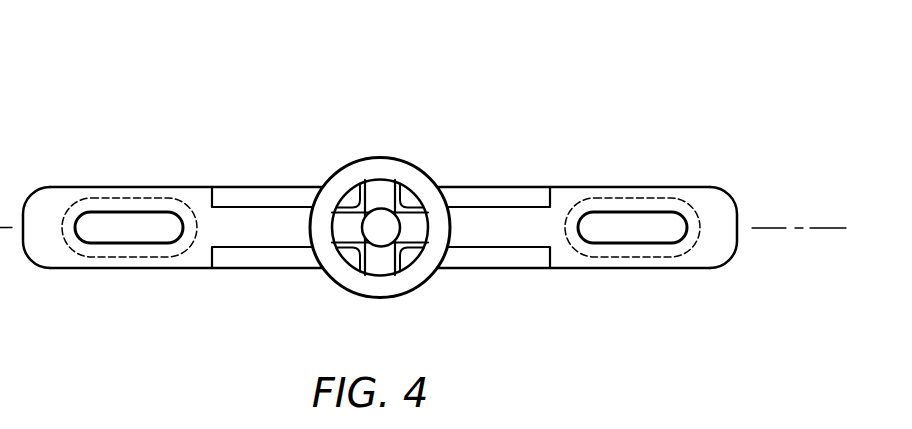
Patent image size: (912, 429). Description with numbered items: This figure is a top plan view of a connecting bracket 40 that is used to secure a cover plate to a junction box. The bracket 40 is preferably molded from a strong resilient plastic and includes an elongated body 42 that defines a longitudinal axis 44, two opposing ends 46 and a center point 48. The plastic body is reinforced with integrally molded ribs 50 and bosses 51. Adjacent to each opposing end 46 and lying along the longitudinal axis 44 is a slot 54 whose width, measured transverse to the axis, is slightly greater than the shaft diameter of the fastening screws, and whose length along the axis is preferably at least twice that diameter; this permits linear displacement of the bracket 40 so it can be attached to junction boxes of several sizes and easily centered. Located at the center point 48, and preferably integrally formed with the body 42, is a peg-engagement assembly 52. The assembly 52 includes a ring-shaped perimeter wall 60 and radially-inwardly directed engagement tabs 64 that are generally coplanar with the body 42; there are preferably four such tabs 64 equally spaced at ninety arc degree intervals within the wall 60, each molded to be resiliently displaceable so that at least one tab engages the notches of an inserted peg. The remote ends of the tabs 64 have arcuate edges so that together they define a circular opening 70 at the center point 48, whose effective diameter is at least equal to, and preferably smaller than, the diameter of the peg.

The bracket 40 is at (384, 190).
The elongated body 42 is at (568, 258).
The longitudinal axis 44 is at (787, 230).
The opposing ends 46 is at (50, 245).
The center point 48 is at (383, 222).
The ribs 50 is at (492, 258).
The bosses 51 is at (352, 200).
The peg-engagement assembly 52 is at (388, 118).
The slot 54 is at (138, 225).
The ring-shaped perimeter wall 60 is at (418, 273).
The engagement tabs 64 is at (418, 227).
The circular opening 70 is at (387, 232).